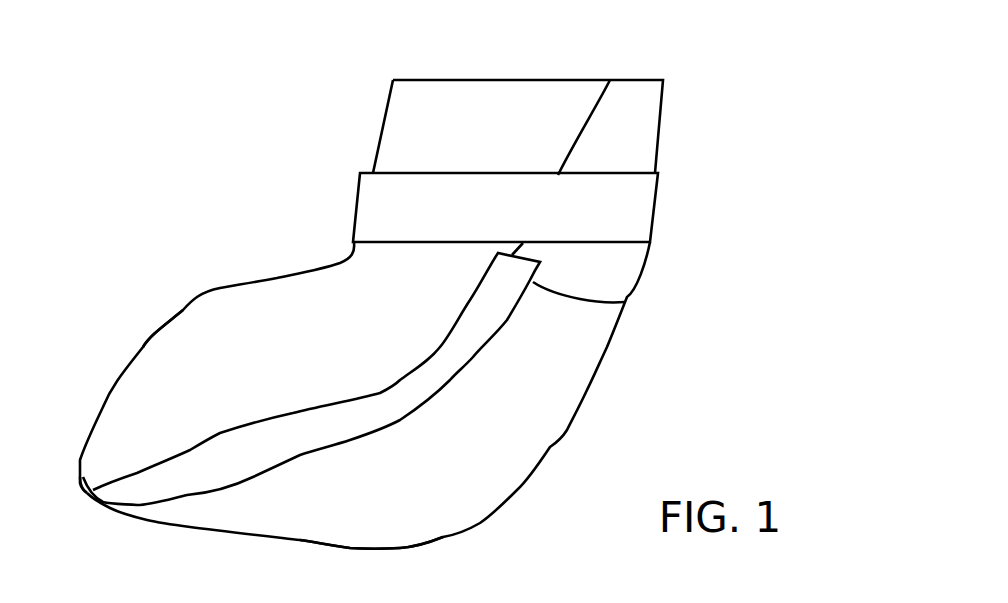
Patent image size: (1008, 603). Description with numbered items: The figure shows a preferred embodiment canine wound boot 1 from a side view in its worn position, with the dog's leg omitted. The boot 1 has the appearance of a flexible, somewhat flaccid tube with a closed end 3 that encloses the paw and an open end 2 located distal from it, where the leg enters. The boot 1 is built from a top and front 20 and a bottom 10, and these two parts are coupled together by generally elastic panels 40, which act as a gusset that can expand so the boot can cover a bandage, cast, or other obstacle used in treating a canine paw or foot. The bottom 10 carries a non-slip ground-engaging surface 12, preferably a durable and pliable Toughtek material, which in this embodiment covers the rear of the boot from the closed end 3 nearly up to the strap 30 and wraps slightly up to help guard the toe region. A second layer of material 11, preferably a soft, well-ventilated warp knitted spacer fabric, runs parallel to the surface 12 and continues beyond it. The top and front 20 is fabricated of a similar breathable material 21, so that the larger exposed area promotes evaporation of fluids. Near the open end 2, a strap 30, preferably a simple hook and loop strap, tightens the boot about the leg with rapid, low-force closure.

The boot 1 is at (166, 100).
The open end 2 is at (460, 74).
The closed end 3 is at (87, 494).
The bottom 10 is at (588, 406).
The second layer of material 11 is at (633, 90).
The non-slip ground-engaging surface 12 is at (462, 523).
The top and front 20 is at (277, 274).
The material 21 is at (188, 317).
The strap 30 is at (373, 212).
The elastic panels 40 is at (190, 475).